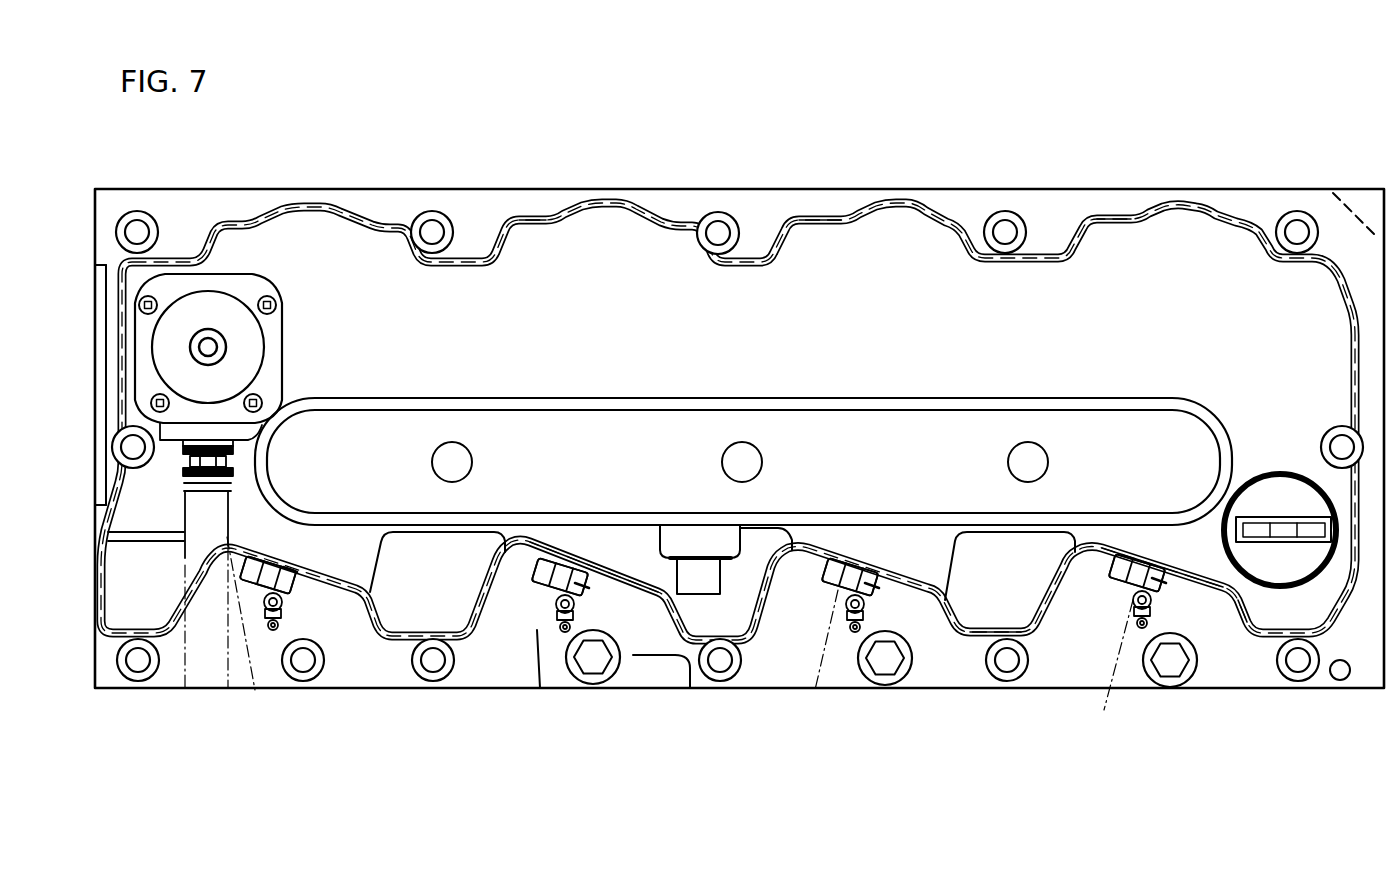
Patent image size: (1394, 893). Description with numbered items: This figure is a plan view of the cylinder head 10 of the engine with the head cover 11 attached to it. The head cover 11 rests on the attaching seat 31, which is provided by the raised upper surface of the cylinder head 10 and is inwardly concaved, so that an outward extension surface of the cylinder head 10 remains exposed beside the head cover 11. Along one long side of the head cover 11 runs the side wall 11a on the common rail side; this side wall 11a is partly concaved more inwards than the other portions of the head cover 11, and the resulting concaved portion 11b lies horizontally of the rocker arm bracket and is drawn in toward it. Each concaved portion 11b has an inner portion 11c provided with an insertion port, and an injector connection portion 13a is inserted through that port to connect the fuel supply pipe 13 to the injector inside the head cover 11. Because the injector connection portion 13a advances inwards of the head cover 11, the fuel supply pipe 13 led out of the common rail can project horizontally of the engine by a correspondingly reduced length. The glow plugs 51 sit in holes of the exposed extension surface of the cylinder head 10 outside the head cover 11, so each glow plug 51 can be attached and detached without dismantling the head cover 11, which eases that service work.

The cylinder head 10 is at (1228, 185).
The head cover 11 is at (1300, 658).
The side wall 11a is at (1046, 642).
The concaved portion 11b is at (637, 585).
The inner portion 11c is at (517, 572).
The fuel supply pipe 13 is at (711, 602).
The injector connection portion 13a is at (562, 572).
The attaching seat 31 is at (1264, 622).
The glow plug 51 is at (592, 582).